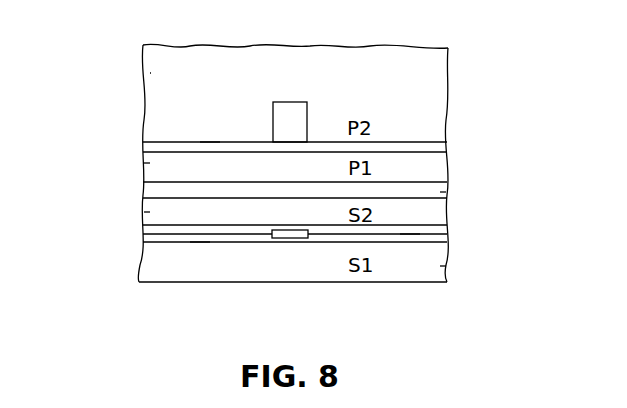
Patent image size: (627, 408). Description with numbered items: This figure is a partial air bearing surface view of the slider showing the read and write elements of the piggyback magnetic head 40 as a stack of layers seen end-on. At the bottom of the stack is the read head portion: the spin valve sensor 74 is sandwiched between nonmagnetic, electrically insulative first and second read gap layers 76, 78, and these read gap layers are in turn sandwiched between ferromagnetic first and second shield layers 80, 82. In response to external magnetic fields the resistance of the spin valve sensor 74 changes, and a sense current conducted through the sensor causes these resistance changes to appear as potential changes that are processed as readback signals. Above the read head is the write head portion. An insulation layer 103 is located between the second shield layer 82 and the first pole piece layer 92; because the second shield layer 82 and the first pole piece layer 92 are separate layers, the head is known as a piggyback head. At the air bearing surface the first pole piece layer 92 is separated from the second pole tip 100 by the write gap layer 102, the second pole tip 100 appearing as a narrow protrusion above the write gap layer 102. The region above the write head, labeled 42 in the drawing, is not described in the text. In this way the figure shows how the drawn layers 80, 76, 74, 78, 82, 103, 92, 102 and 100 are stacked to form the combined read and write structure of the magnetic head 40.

The piggyback magnetic head 40 is at (468, 63).
The overcoat layer 42 is at (150, 73).
The second pole tip 100 is at (288, 110).
The write gap layer 102 is at (210, 145).
The first pole piece layer 92 is at (150, 163).
The insulation layer 103 is at (442, 192).
The second shield layer 82 is at (145, 212).
The first shield layer 80 is at (442, 266).
The spin valve sensor 74 is at (287, 238).
The first read gap layer 76 is at (200, 242).
The second read gap layer 78 is at (410, 230).